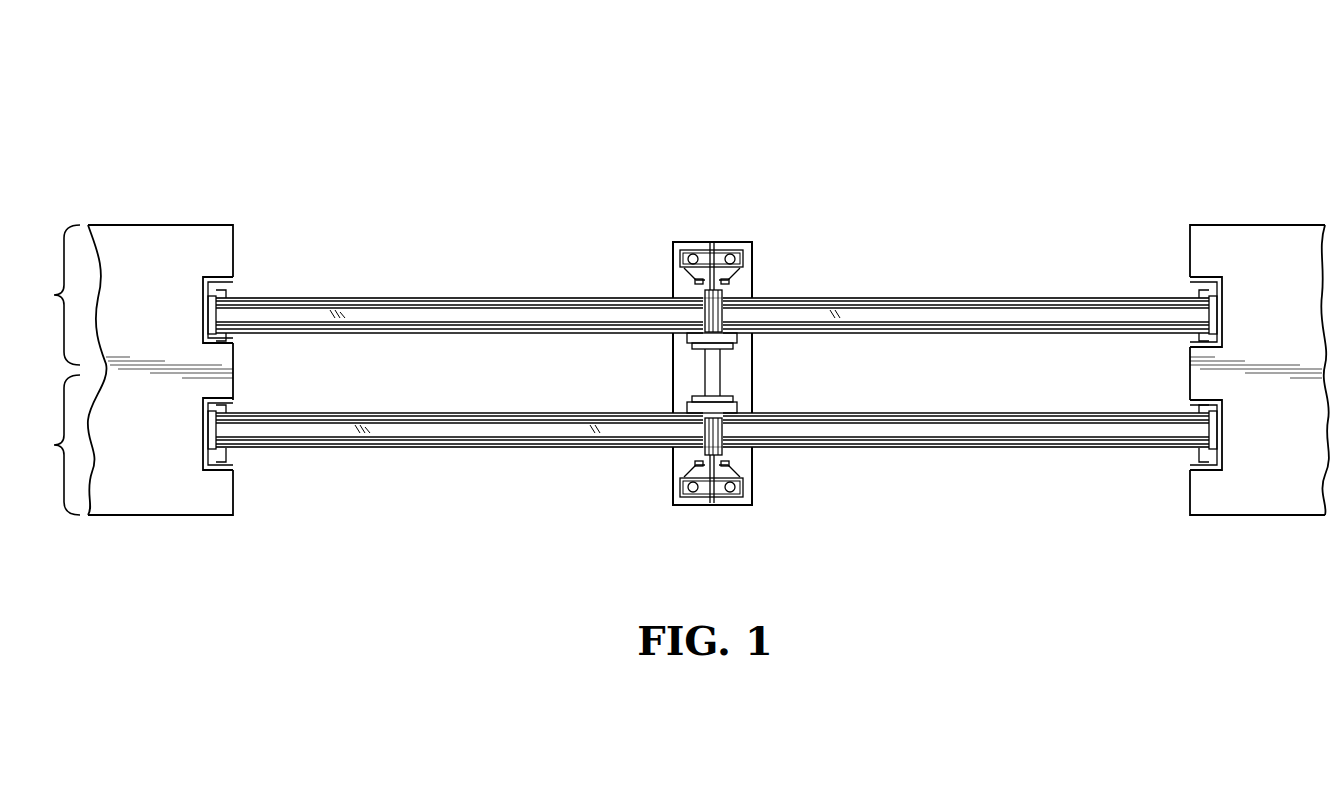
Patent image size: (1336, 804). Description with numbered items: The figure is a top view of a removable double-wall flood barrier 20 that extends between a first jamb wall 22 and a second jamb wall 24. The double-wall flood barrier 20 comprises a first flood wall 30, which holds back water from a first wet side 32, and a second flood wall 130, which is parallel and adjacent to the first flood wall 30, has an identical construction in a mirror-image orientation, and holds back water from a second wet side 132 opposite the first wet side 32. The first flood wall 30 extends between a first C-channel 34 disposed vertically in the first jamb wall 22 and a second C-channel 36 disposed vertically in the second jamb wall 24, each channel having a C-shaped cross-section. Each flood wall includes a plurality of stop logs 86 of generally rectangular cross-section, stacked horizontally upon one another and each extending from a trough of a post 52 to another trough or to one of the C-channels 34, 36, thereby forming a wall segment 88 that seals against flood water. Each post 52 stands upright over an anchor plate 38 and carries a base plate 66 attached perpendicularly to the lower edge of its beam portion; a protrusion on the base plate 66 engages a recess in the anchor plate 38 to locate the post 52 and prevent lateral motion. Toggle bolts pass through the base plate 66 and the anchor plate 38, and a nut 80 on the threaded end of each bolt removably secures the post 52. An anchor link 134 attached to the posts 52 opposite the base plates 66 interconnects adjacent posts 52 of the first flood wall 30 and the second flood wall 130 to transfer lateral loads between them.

The double-wall flood barrier 20 is at (559, 152).
The first jamb wall 22 is at (138, 261).
The second jamb wall 24 is at (1275, 261).
The first flood wall 30 is at (48, 295).
The second flood wall 130 is at (43, 445).
The first wet side 32 is at (363, 236).
The second wet side 132 is at (330, 521).
The first C-channel 34 is at (197, 297).
The second C-channel 36 is at (1228, 287).
The anchor plate 38 is at (688, 378).
The anchor link 134 is at (713, 365).
The post 52 is at (698, 293).
The base plate 66 is at (742, 279).
The nut 80 is at (731, 254).
The stop log 86 is at (502, 311).
The wall segment 88 is at (459, 290).